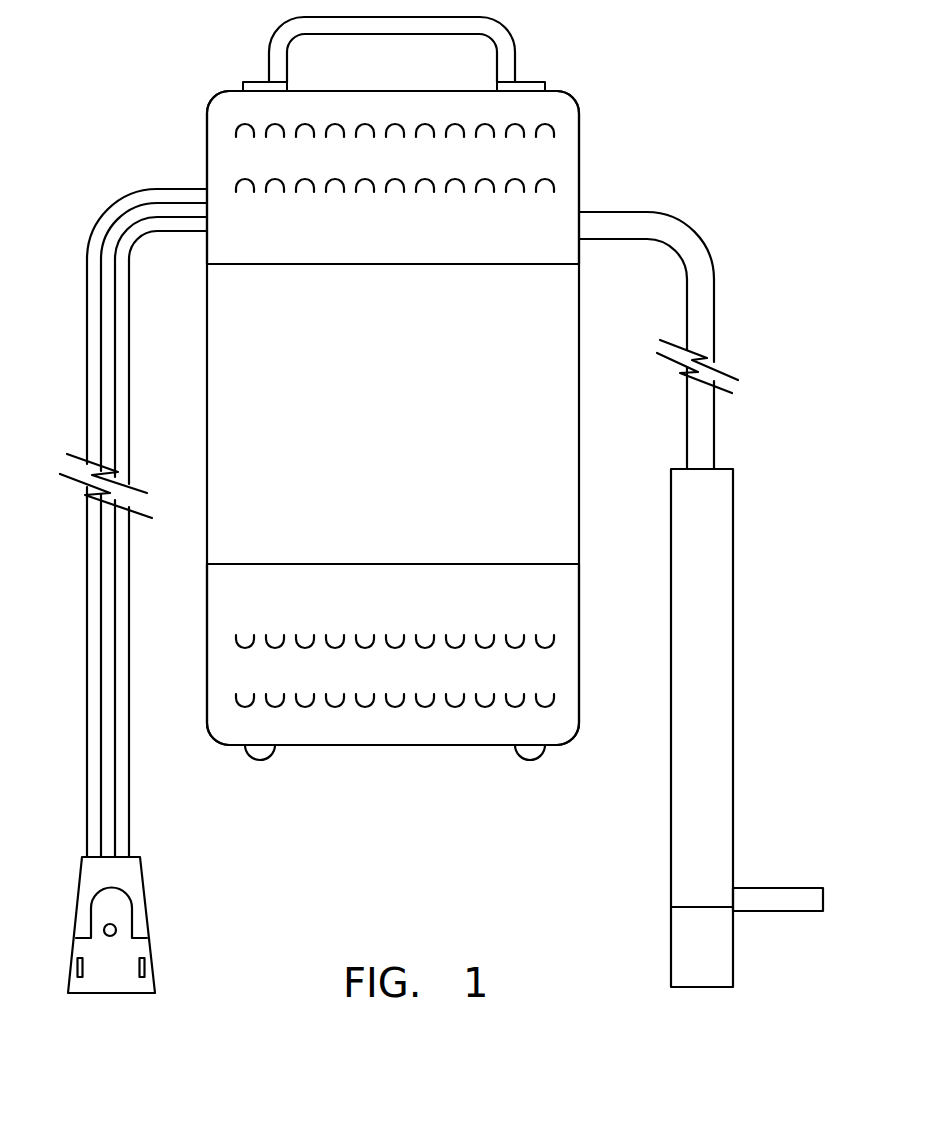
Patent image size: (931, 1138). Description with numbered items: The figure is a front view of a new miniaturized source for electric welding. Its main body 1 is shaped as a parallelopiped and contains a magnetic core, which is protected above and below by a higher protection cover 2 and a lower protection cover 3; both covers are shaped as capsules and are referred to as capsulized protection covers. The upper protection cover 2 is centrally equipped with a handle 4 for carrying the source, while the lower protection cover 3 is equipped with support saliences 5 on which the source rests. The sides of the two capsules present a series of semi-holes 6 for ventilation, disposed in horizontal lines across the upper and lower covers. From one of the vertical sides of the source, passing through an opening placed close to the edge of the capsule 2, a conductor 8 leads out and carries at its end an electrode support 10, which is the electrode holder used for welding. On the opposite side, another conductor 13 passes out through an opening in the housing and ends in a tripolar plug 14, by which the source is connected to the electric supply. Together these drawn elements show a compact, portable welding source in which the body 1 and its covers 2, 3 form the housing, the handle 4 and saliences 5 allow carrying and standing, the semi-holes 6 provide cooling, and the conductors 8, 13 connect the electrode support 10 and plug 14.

The main body 1 is at (405, 422).
The higher protection cover 2 is at (227, 115).
The lower protection cover 3 is at (227, 715).
The handle 4 is at (510, 63).
The support saliences 5 is at (527, 753).
The semi-holes 6 is at (557, 176).
The conductor 8 is at (703, 302).
The electrode support 10 is at (705, 675).
The conductor 13 is at (122, 593).
The tripolar plug 14 is at (115, 955).